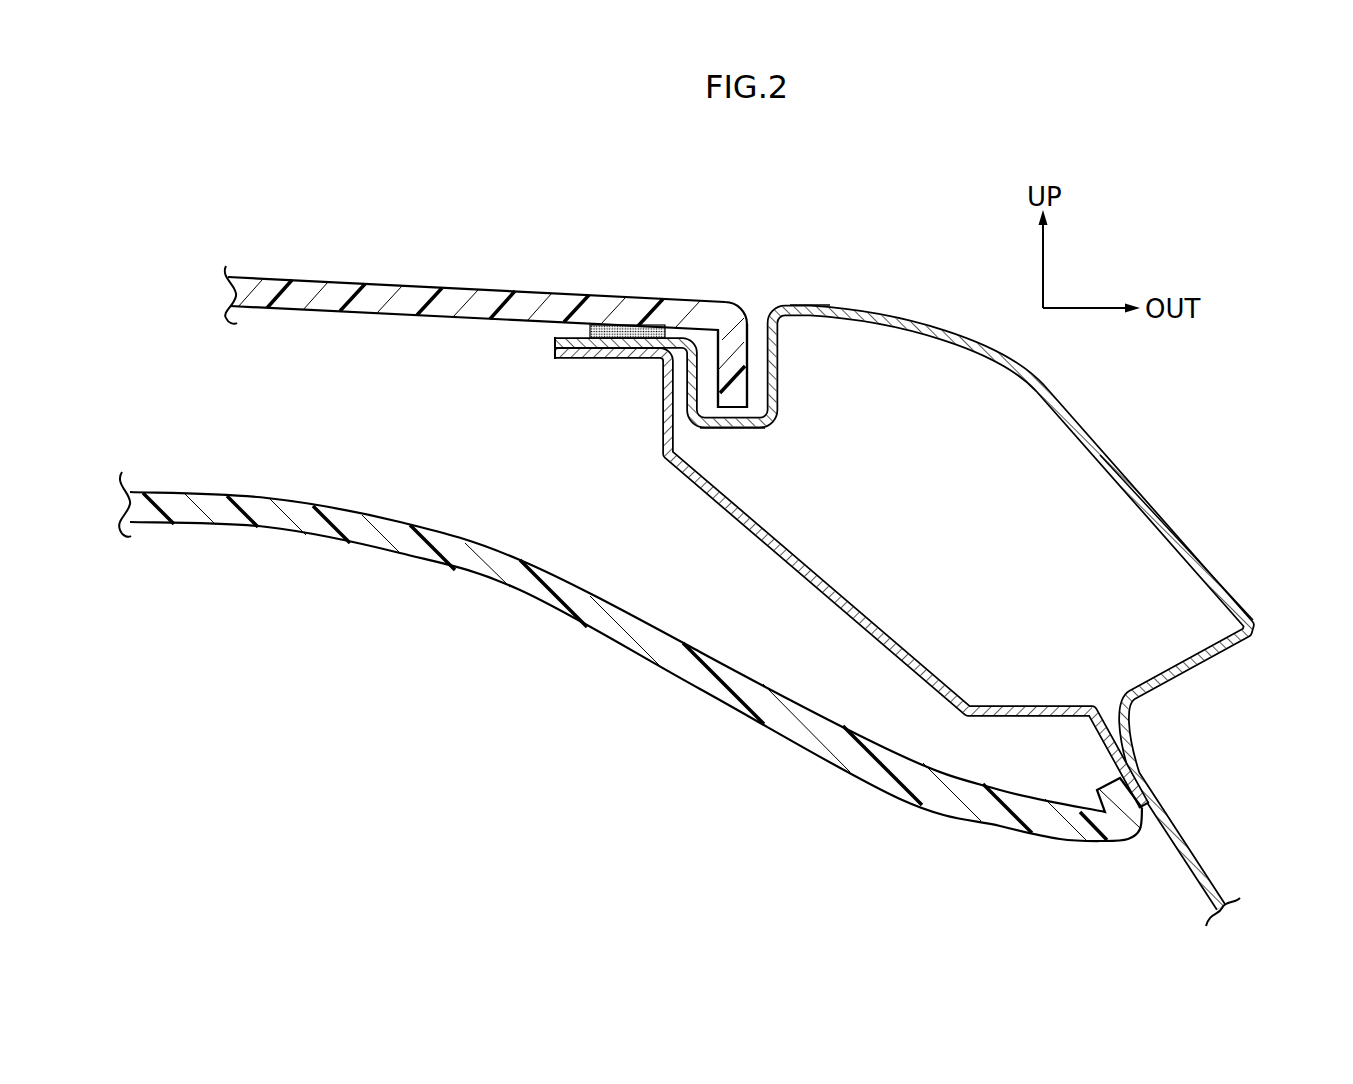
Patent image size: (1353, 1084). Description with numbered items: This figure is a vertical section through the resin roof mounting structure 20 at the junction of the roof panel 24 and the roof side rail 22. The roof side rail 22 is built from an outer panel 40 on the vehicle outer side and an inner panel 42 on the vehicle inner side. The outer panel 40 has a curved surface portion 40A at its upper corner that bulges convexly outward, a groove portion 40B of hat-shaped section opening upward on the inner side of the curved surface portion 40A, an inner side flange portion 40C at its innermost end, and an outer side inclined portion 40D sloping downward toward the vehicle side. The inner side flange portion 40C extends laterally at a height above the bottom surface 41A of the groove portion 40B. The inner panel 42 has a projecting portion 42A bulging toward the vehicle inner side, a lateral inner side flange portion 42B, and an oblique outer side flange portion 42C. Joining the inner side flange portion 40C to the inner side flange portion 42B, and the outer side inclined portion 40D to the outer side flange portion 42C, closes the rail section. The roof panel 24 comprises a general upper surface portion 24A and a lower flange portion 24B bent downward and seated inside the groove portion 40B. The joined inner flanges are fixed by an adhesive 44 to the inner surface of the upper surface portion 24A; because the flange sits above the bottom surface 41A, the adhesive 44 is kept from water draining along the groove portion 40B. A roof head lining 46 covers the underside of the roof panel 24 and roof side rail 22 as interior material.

The vehicle roof structure 20 is at (860, 222).
The roof side rail 22 is at (1163, 476).
The roof panel 24 is at (485, 284).
The upper surface portion 24A is at (297, 290).
The lower flange portion 24B is at (742, 417).
The outer panel 40 is at (1048, 371).
The curved surface portion 40A is at (1082, 420).
The groove portion 40B is at (762, 408).
The inner side flange portion 40C is at (570, 340).
The outer side inclined portion 40D is at (1177, 828).
The bottom surface 41A is at (717, 428).
The inner panel 42 is at (828, 610).
The projecting portion 42A is at (770, 546).
The inner side flange portion 42B is at (575, 358).
The outer side flange portion 42C is at (1103, 737).
The adhesive 44 is at (617, 326).
The roof head lining 46 is at (618, 632).